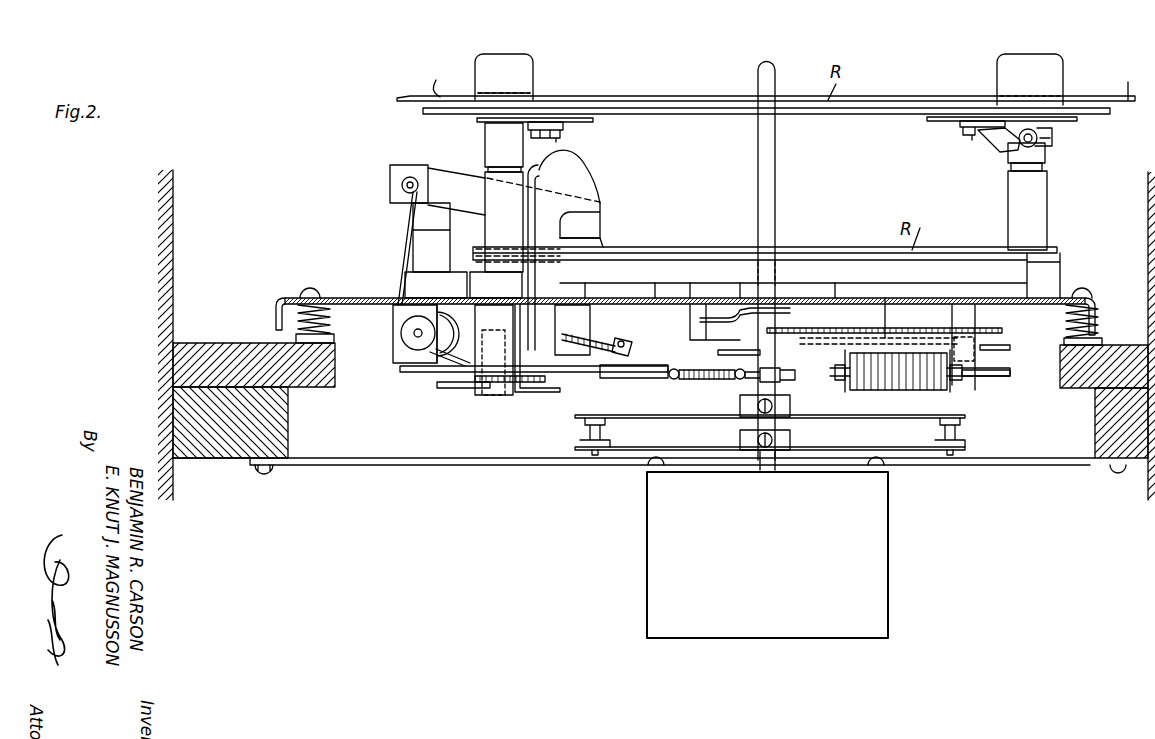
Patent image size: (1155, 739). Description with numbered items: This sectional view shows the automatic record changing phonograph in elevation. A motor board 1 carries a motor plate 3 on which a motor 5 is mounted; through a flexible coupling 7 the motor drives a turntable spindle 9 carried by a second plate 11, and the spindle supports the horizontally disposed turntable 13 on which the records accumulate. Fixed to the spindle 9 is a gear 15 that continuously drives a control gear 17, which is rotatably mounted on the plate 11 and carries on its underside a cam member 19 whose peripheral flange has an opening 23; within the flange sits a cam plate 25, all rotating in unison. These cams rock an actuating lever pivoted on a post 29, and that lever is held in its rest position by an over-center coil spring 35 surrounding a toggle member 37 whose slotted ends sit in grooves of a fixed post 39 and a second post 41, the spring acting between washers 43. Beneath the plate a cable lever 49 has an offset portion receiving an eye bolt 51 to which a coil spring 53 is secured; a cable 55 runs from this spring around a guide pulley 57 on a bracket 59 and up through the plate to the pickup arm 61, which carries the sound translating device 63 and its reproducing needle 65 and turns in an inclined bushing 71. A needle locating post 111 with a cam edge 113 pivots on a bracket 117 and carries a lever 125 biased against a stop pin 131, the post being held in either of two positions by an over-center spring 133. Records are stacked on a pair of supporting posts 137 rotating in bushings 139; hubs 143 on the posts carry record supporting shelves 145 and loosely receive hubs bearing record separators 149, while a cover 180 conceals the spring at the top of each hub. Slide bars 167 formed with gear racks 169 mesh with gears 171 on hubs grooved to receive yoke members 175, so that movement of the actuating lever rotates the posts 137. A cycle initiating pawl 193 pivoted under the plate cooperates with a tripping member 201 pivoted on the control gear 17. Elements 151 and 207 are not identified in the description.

The motor board 1 is at (240, 455).
The motor plate 3 is at (366, 465).
The motor 5 is at (647, 596).
The flexible coupling 7 is at (940, 440).
The turntable spindle 9 is at (776, 142).
The second plate 11 is at (322, 295).
The turntable 13 is at (1015, 262).
The gear 15 is at (705, 343).
The gear 17 is at (985, 333).
The cam member 19 is at (975, 353).
The opening 23 is at (887, 298).
The cam plate 25 is at (905, 350).
The post 29 is at (658, 298).
The coil spring 35 is at (890, 390).
The toggle member 37 is at (985, 378).
The post 39 is at (968, 392).
The second post 41 is at (845, 385).
The washers 43 is at (950, 385).
The cable lever 49 is at (795, 350).
The eye bolt 51 is at (760, 384).
The coil spring 53 is at (680, 382).
The cable 55 is at (405, 284).
The guide roller or pulley 57 is at (440, 368).
The bracket 59 is at (395, 345).
The pickup arm 61 is at (390, 174).
The sound translating device 63 is at (605, 210).
The reproducing needle 65 is at (605, 239).
The bushing 71 is at (412, 254).
The needle locating lever or post 111 is at (568, 178).
The cam edge 113 is at (578, 152).
The bracket 117 is at (598, 280).
The lever 125 is at (610, 340).
The stop pin 131 is at (648, 360).
The over-center spring 133 is at (580, 346).
The supporting posts 137 is at (490, 170).
The bushings 139 is at (485, 197).
The hubs 143 is at (485, 134).
The record supporting shelves 145 is at (585, 126).
The record separators 149 is at (436, 80).
The hinge 151 is at (1000, 145).
The slide bars 167 is at (590, 374).
The gear racks 169 is at (560, 392).
The gears 171 is at (480, 395).
The yoke members 175 is at (445, 390).
The cover 180 is at (510, 60).
The cycle initiating pawl 193 is at (742, 298).
The tripping member 201 is at (834, 298).
The member 207 is at (692, 298).